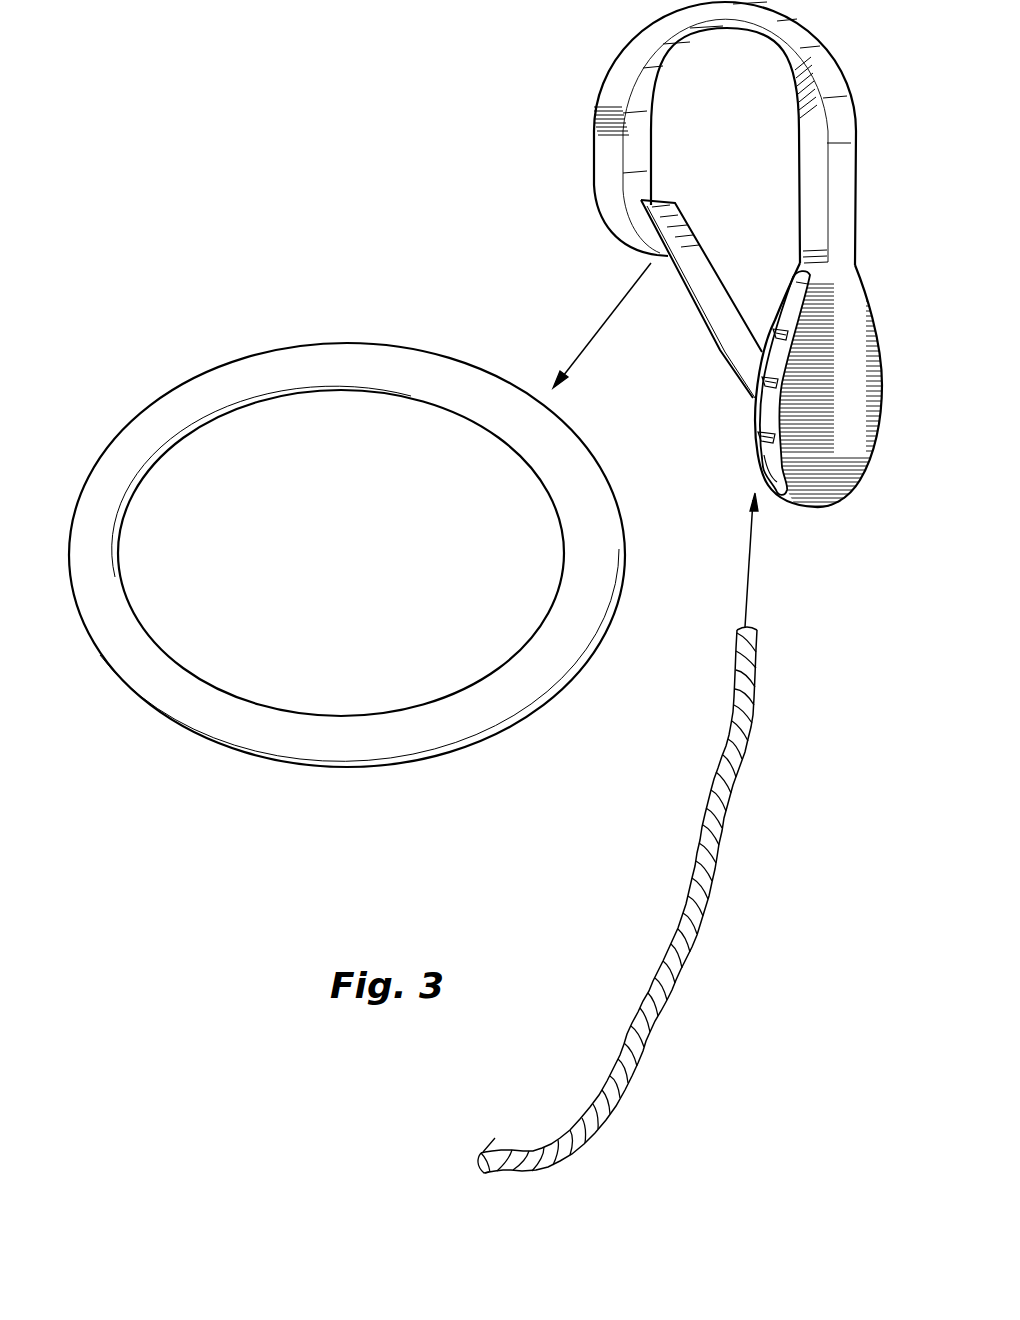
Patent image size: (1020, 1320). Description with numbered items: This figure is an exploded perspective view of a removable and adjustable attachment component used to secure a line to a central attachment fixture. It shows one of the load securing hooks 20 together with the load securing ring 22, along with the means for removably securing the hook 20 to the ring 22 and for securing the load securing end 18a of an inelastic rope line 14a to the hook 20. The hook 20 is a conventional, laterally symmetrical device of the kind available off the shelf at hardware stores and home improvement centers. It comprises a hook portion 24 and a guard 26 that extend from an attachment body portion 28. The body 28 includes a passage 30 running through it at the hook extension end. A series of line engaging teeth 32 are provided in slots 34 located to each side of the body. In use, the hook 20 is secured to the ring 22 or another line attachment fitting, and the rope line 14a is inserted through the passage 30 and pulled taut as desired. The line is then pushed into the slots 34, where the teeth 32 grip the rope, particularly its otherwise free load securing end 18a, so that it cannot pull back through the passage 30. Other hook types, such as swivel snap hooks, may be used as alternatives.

The load securing hook 20 is at (565, 151).
The load securing ring 22 is at (340, 748).
The hook portion 24 is at (604, 200).
The guard 26 is at (710, 298).
The attachment body portion 28 is at (850, 413).
The passage 30 is at (790, 310).
The line engaging teeth 32 is at (753, 432).
The slots 34 is at (772, 460).
The load securing end 18a is at (740, 748).
The inelastic rope line 14a is at (643, 1030).